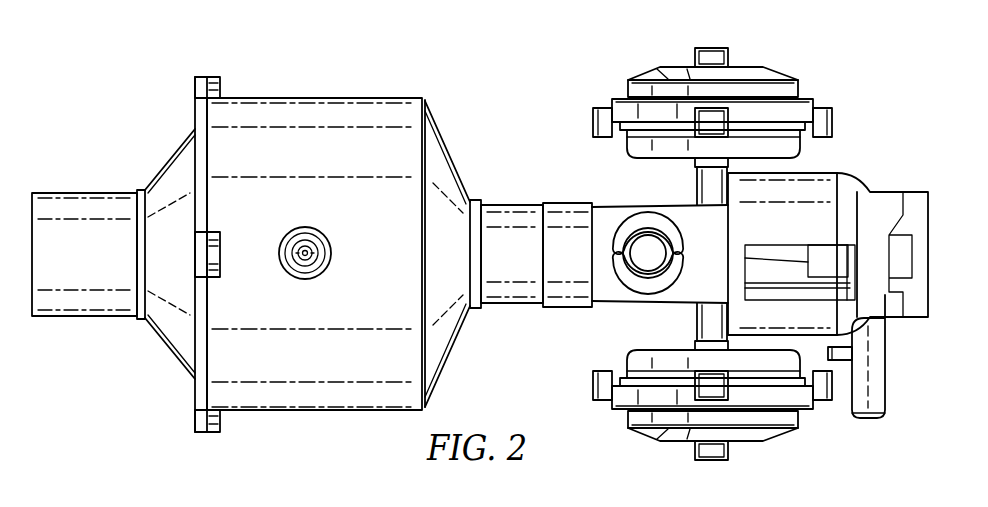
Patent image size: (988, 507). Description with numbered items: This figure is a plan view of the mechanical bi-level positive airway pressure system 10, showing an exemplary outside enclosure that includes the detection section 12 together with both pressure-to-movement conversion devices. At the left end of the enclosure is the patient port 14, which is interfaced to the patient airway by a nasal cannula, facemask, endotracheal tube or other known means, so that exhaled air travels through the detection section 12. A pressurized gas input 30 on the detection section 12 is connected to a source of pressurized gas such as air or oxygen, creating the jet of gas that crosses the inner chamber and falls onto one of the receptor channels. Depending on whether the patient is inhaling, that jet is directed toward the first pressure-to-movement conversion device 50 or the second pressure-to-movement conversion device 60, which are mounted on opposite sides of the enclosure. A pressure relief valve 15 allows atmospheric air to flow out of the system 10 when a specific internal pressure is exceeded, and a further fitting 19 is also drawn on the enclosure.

The mechanical bi-level positive airway pressure system 10 is at (477, 246).
The detection section 12 is at (350, 110).
The patient port 14 is at (80, 203).
The pressure relief valve 15 is at (645, 248).
The connector tube 19 is at (877, 367).
The pressurized gas input 30 is at (312, 242).
The first pressure-to-movement conversion device 50 is at (747, 75).
The second pressure-to-movement conversion device 60 is at (757, 422).